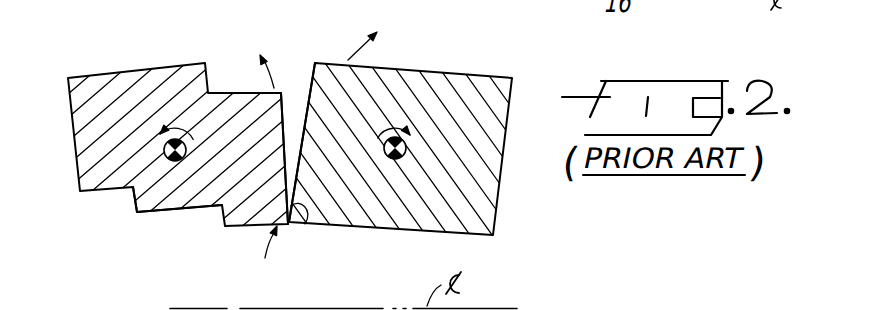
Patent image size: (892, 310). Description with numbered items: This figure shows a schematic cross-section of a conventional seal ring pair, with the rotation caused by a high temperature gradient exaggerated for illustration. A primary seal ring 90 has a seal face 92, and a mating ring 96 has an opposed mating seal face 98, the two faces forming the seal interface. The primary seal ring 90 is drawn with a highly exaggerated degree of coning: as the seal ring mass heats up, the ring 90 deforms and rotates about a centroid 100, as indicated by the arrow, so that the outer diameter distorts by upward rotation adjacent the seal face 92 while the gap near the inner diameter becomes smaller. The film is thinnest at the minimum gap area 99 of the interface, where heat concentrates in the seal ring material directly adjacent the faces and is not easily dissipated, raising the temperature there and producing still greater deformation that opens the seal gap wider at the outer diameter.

The primary seal ring 90 is at (140, 78).
The seal face 92 is at (290, 95).
The mating ring 96 is at (428, 83).
The mating seal face 98 is at (313, 76).
The minimum gap area 99 is at (305, 224).
The centroid 100 is at (135, 201).